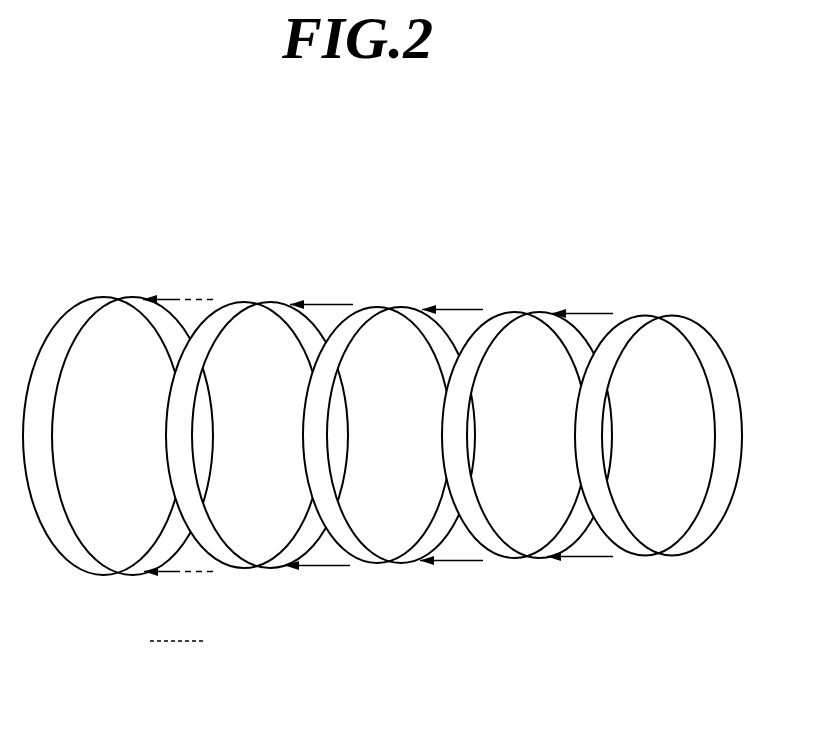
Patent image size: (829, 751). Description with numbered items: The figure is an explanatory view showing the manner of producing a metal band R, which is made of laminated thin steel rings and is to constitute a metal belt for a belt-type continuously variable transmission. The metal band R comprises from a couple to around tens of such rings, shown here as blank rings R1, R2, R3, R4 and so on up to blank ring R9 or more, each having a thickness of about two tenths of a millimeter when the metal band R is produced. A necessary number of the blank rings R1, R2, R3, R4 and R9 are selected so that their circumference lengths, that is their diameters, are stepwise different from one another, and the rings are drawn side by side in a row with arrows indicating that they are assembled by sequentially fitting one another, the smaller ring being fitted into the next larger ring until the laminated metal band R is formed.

The metal band R is at (318, 637).
The blank ring R1 is at (642, 556).
The blank ring R2 is at (505, 558).
The blank ring R3 is at (367, 564).
The blank ring R4 is at (237, 570).
The blank ring R9 is at (85, 572).